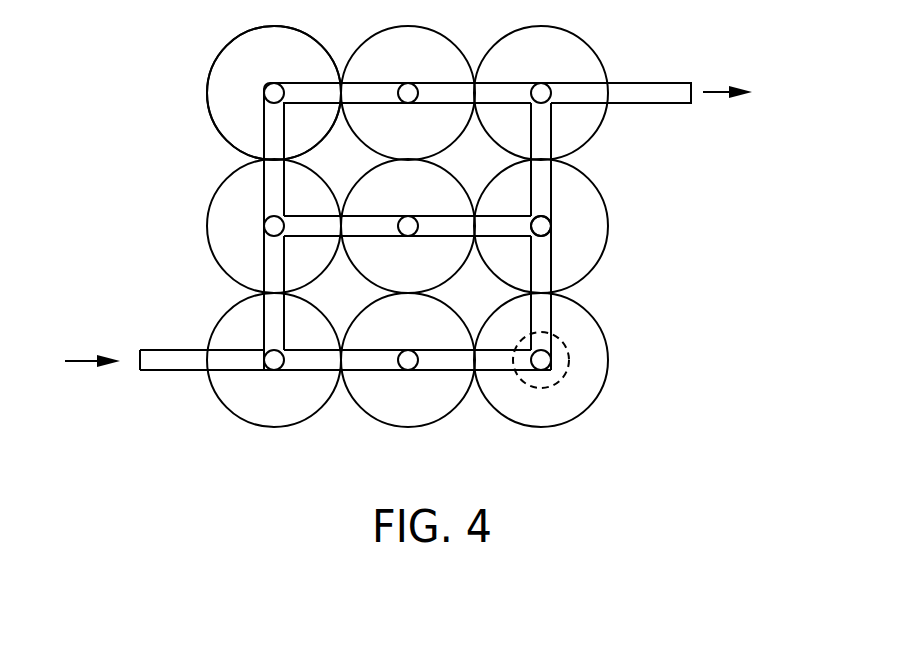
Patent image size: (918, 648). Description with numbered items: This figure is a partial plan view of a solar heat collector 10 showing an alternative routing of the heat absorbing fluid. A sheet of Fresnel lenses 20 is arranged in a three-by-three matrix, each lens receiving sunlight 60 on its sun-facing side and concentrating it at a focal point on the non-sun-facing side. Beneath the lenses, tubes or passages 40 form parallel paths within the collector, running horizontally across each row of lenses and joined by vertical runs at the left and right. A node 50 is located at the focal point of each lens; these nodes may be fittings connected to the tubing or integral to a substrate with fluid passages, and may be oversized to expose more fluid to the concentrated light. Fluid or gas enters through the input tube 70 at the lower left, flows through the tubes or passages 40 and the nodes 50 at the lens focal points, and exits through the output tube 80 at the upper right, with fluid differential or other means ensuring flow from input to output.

The solar heat collector 10 is at (671, 433).
The Fresnel lens 20 is at (242, 47).
The tubing or fluid passage 40 is at (265, 193).
The node 50 is at (553, 222).
The sunlight 60 is at (562, 342).
The input tube 70 is at (82, 361).
The output tube 80 is at (713, 92).